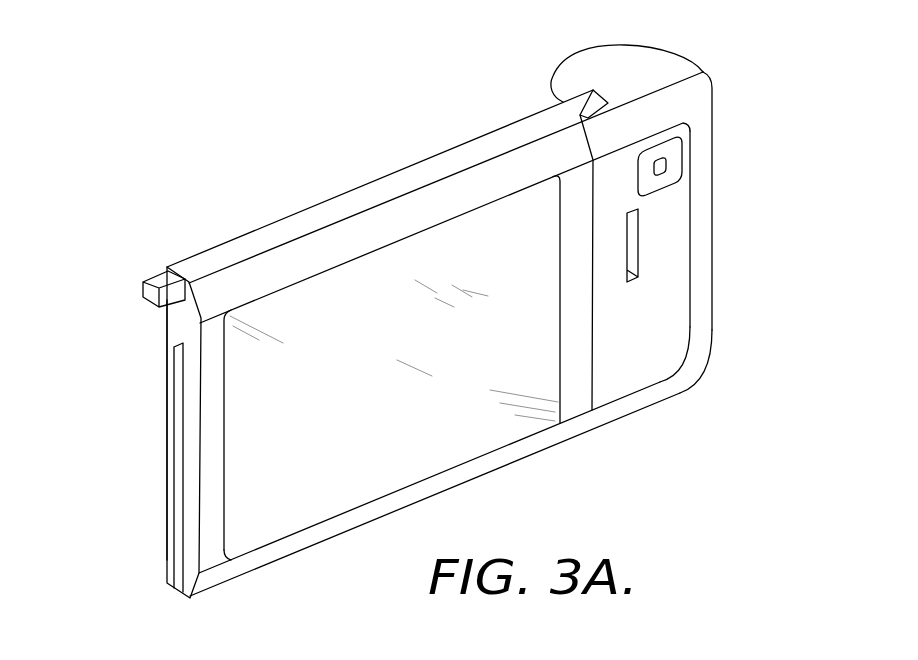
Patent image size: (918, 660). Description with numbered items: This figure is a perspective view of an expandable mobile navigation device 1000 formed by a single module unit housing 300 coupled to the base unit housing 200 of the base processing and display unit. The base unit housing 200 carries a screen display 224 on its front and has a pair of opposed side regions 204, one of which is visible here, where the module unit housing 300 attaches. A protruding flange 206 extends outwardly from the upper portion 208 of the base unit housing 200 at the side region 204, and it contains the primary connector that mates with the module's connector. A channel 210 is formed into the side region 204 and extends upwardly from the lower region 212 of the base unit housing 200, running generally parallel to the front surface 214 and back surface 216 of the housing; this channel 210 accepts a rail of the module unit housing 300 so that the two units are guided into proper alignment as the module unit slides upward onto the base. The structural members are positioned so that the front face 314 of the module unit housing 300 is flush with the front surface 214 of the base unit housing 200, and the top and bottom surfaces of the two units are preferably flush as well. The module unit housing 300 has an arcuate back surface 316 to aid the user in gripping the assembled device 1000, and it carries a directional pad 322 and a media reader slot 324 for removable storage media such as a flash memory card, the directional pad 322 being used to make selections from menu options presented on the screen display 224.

The mobile navigation device 1000 is at (446, 338).
The base unit housing 200 is at (391, 356).
The side region 204 is at (177, 323).
The protruding flange 206 is at (150, 281).
The upper portion 208 is at (168, 270).
The channel 210 is at (178, 545).
The lower region 212 is at (190, 598).
The front surface 214 is at (585, 405).
The back surface 216 is at (165, 376).
The screen display 224 is at (356, 275).
The module unit housing 300 is at (642, 214).
The front face 314 is at (677, 333).
The arcuate back surface 316 is at (548, 93).
The directional pad 322 is at (681, 157).
The media reader slot 324 is at (628, 245).